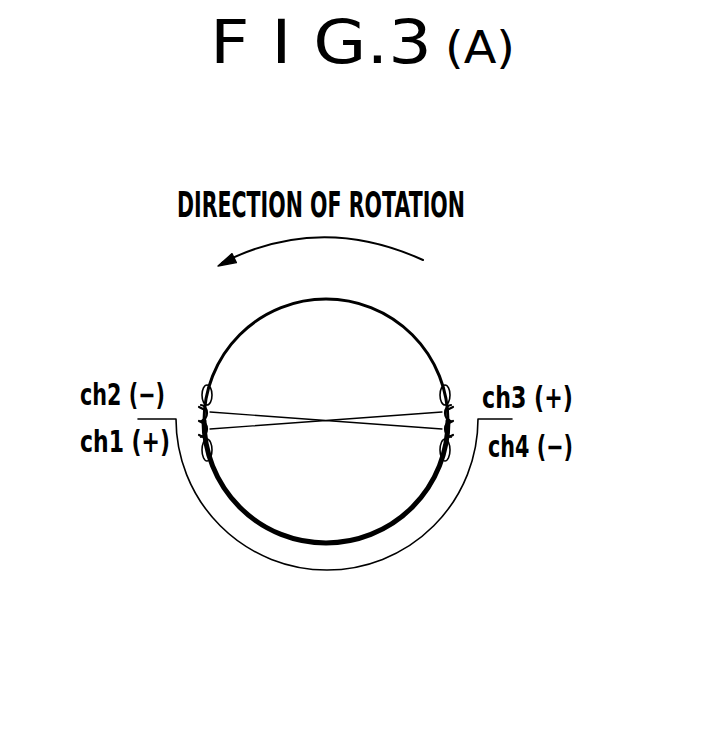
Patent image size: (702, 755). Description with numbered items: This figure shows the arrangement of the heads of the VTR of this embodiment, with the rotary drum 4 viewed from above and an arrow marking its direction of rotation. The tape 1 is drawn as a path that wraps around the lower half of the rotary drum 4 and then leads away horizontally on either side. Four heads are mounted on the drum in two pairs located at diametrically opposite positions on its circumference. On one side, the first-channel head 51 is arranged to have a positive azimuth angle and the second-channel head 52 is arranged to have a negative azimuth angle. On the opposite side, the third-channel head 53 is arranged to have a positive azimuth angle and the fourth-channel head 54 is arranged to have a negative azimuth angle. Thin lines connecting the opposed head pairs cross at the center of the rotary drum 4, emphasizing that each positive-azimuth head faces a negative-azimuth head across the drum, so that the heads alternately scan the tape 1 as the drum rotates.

The tape 1 is at (322, 571).
The rotary drum 4 is at (393, 313).
The head ch1 51 is at (214, 458).
The head ch2 52 is at (208, 385).
The head ch3 53 is at (445, 377).
The head ch4 54 is at (438, 462).